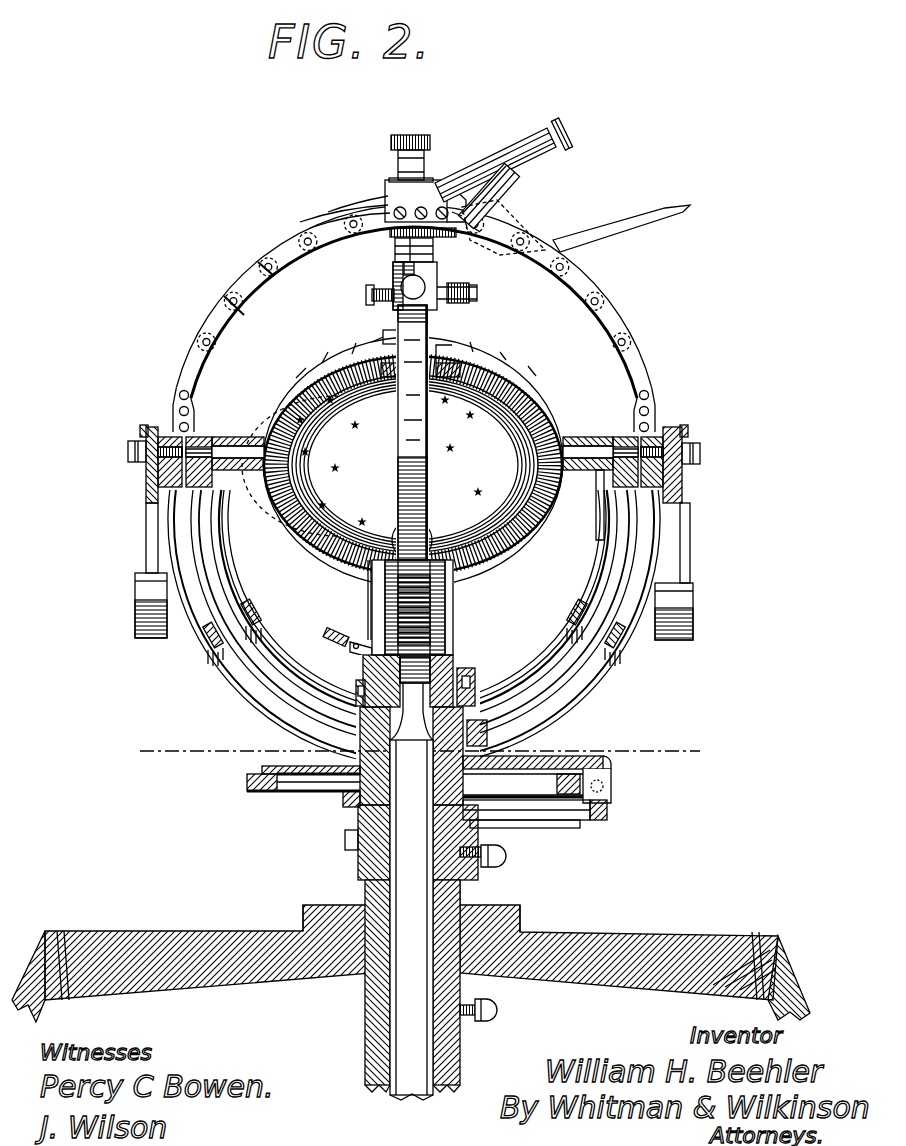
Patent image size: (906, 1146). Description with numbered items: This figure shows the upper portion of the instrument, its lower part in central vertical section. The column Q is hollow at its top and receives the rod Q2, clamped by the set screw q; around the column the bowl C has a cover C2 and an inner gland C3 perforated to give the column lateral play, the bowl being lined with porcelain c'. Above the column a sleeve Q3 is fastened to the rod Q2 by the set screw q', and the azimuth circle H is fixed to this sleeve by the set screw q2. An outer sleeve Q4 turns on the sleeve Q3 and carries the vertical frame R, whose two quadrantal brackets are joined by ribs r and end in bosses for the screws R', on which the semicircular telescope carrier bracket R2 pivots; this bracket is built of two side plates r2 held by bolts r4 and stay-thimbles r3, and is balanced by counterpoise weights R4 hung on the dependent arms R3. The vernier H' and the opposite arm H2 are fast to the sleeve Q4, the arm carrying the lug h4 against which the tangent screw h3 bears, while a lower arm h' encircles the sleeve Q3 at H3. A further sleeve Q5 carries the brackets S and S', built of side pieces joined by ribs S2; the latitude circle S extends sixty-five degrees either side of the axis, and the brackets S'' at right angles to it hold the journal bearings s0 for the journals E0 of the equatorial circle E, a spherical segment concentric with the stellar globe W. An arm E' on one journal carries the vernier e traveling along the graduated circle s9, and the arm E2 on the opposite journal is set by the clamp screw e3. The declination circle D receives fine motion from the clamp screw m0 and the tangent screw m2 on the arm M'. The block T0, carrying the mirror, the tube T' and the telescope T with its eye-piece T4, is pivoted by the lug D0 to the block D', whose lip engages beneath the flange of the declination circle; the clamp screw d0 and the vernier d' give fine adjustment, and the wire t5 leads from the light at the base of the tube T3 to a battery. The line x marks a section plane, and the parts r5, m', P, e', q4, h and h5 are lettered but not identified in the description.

The object tube T' is at (419, 131).
The telescope T is at (495, 155).
The block T0 is at (390, 196).
The tube T3 is at (512, 190).
The eye-piece T4 is at (570, 150).
The wire t5 is at (588, 220).
The lug D0 is at (329, 211).
The strap r5 is at (344, 202).
The telescope carrier bracket R2 is at (238, 272).
The side plates r2 is at (232, 294).
The stay-thimbles r3 is at (256, 270).
The bolts r4 is at (236, 306).
The block D' is at (392, 274).
The vernier d' is at (359, 299).
The clamp screw d0 is at (442, 292).
The tangent screw m2 is at (478, 294).
The arm M' is at (456, 279).
The bracket m' is at (365, 324).
The clamp screw m0 is at (462, 346).
The equatorial circle E is at (413, 462).
The journals E0 is at (238, 438).
The journal bearings s0 is at (198, 440).
The screws R' is at (418, 440).
The declination circle D is at (388, 465).
The stellar globe W is at (389, 460).
The dependent arm R3 is at (146, 520).
The arm E' is at (414, 600).
The arm E2 is at (596, 520).
The pivot P is at (432, 530).
The clamp screw e3 is at (640, 576).
The counterpoise weights R4 is at (135, 604).
The ribs S2 is at (258, 600).
The graduated circle s9 is at (366, 578).
The latitude circle S is at (412, 607).
The clamp e' is at (342, 620).
The brackets S' is at (414, 606).
The bracket q4 is at (472, 646).
The sleeve Q5 is at (453, 670).
The vernier e is at (351, 656).
The ribs r is at (204, 634).
The brackets S'' is at (404, 616).
The vertical frame R is at (414, 628).
The section line x is at (420, 752).
The vernier H' is at (298, 748).
The azimuth circle H is at (296, 802).
The set screw q2 is at (346, 802).
The lug h is at (336, 841).
The sleeve Q3 is at (366, 866).
The outer sleeve Q4 is at (562, 756).
The arm H2 is at (600, 764).
The lug h4 is at (612, 772).
The tangent screw h3 is at (612, 790).
The block h5 is at (608, 810).
The lower arm h' is at (536, 836).
The encircling portion of lower arm H3 is at (486, 822).
The set screw q' is at (490, 872).
The bowl C is at (45, 931).
The porcelain lining c' is at (410, 938).
The cover C2 is at (208, 931).
The inner gland C3 is at (522, 916).
The set screw q is at (496, 1022).
The column Q is at (462, 1048).
The rod Q2 is at (418, 1100).